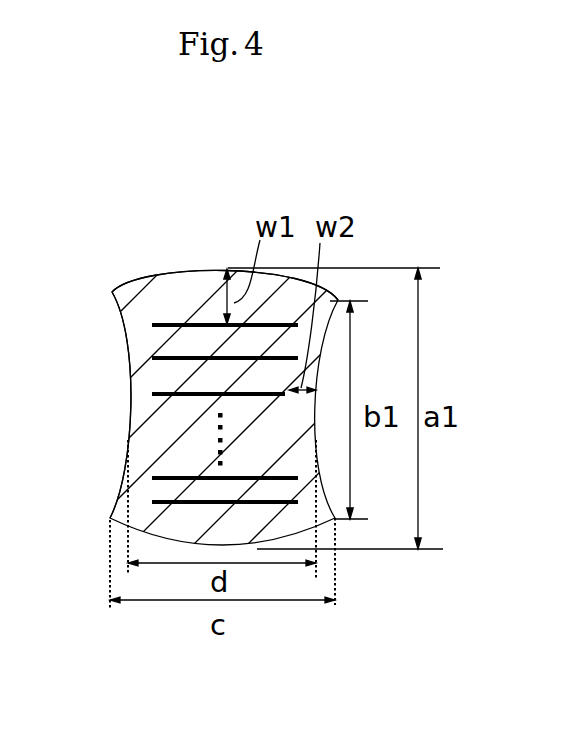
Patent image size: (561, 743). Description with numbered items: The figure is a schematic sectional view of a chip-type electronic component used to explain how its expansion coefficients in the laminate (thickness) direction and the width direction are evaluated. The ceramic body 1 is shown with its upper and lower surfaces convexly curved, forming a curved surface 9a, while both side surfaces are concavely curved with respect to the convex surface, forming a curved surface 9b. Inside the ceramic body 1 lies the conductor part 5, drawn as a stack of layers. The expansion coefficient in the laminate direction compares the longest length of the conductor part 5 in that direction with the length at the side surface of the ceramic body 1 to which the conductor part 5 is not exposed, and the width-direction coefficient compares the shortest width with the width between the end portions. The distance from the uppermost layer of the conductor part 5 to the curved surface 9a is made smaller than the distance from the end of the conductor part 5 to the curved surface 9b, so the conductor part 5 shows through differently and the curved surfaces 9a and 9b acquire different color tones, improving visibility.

The ceramic body 1 is at (199, 265).
The conductor part 5 is at (168, 324).
The curved surface 9a is at (169, 322).
The curved surface 9b is at (123, 342).